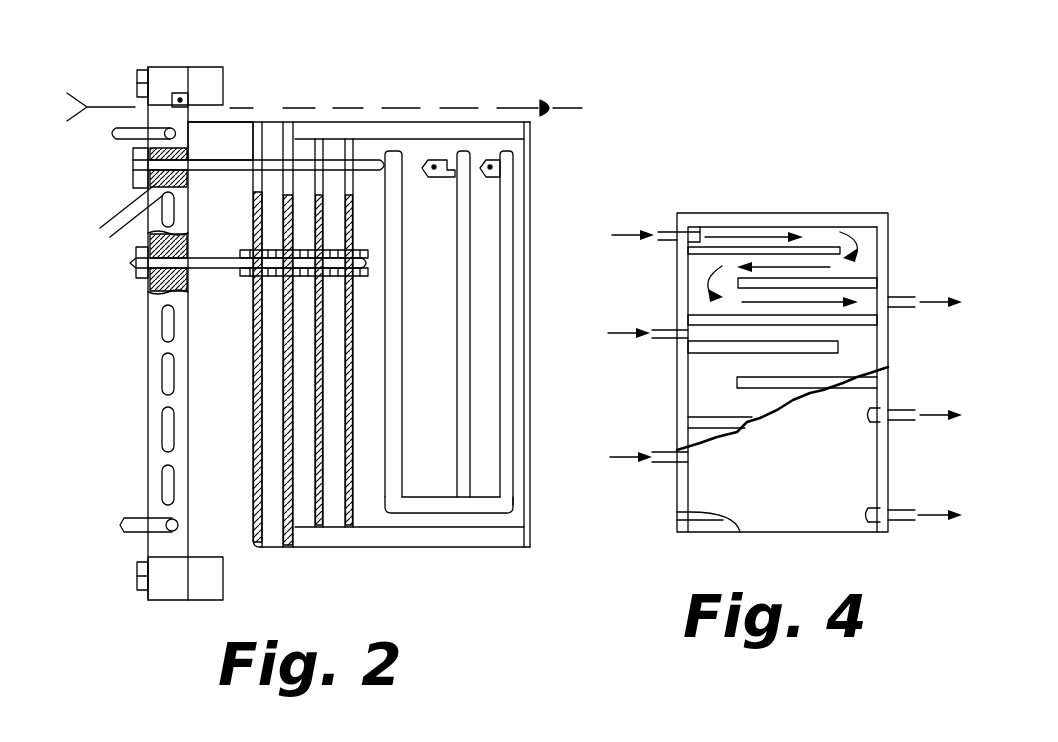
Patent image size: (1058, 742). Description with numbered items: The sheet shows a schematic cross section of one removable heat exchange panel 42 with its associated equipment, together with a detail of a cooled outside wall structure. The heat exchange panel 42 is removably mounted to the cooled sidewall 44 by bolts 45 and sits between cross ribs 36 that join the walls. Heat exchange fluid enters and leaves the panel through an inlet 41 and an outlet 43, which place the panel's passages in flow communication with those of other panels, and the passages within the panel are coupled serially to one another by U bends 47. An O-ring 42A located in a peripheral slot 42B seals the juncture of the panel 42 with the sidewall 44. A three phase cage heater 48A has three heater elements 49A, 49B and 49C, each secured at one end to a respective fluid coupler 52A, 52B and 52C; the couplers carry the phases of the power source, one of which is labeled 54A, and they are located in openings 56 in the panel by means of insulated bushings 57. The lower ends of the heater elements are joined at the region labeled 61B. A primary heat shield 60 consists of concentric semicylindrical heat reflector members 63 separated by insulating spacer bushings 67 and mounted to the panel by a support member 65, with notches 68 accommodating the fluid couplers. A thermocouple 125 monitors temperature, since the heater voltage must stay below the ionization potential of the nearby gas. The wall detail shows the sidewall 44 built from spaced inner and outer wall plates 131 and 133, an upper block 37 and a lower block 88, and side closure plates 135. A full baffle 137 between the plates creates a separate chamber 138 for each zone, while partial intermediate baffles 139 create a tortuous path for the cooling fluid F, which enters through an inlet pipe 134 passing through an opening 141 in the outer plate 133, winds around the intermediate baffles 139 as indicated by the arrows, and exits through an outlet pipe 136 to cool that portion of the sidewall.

In FIG. 2, the cross rib 36 is at (223, 83).
In FIG. 2, the inlet 41 is at (120, 140).
In FIG. 2, the heat exchange panel 42 is at (148, 415).
In FIG. 2, the O-ring 42A is at (180, 93).
In FIG. 2, the peripheral slot 42B is at (245, 152).
In FIG. 2, the outlet 43 is at (133, 517).
In FIG. 2, the bolt 45 is at (137, 82).
In FIG. 2, the U bend 47 is at (160, 377).
In FIG. 2, the three phase cage heater 48A is at (502, 508).
In FIG. 2, the heater element 49A is at (393, 403).
In FIG. 2, the heater element 49B is at (462, 450).
In FIG. 2, the heater element 49C is at (505, 482).
In FIG. 2, the fluid coupler 52A is at (372, 160).
In FIG. 2, the fluid coupler 52B is at (435, 163).
In FIG. 2, the fluid coupler 52C is at (492, 163).
In FIG. 2, the three phase power source phase 54A is at (122, 203).
In FIG. 2, the opening 56 is at (187, 182).
In FIG. 2, the insulated bushing 57 is at (120, 260).
In FIG. 2, the primary heat shield 60 is at (258, 487).
In FIG. 2, the tube bottom 61B is at (481, 507).
In FIG. 2, the heat reflector member 63 is at (345, 462).
In FIG. 2, the support member 65 is at (218, 258).
In FIG. 2, the spacer bushing 67 is at (345, 282).
In FIG. 2, the notch 68 is at (265, 138).
In FIG. 2, the thermocouple 125 is at (349, 107).
In FIG. 4, the cooling fluid F is at (630, 234).
In FIG. 4, the upper block 37 is at (773, 224).
In FIG. 4, the cooled sidewall 44 is at (798, 477).
In FIG. 4, the lower block 88 is at (705, 525).
In FIG. 4, the inner wall plate 131 is at (863, 250).
In FIG. 4, the outer wall plate 133 is at (695, 487).
In FIG. 4, the inlet pipe 134 is at (668, 230).
In FIG. 4, the side closure plate 135 is at (683, 265).
In FIG. 4, the outlet pipe 136 is at (898, 298).
In FIG. 4, the full baffle 137 is at (853, 325).
In FIG. 4, the chamber 138 is at (700, 288).
In FIG. 4, the partial intermediate baffle 139 is at (830, 285).
In FIG. 4, the through opening 141 is at (697, 228).